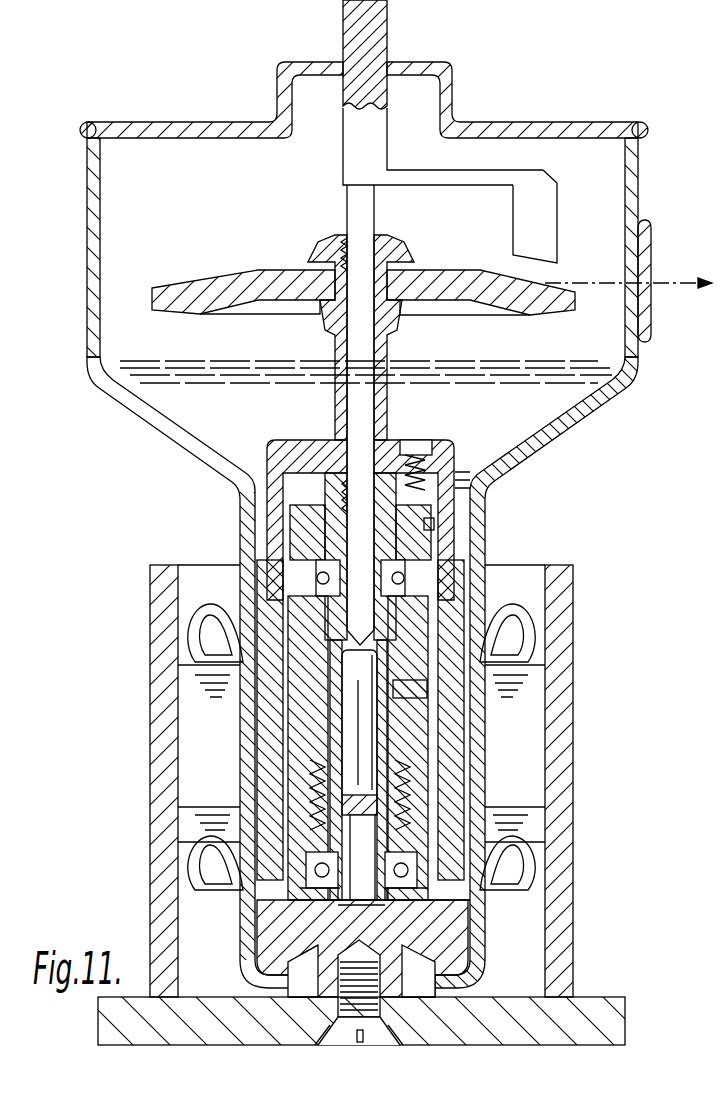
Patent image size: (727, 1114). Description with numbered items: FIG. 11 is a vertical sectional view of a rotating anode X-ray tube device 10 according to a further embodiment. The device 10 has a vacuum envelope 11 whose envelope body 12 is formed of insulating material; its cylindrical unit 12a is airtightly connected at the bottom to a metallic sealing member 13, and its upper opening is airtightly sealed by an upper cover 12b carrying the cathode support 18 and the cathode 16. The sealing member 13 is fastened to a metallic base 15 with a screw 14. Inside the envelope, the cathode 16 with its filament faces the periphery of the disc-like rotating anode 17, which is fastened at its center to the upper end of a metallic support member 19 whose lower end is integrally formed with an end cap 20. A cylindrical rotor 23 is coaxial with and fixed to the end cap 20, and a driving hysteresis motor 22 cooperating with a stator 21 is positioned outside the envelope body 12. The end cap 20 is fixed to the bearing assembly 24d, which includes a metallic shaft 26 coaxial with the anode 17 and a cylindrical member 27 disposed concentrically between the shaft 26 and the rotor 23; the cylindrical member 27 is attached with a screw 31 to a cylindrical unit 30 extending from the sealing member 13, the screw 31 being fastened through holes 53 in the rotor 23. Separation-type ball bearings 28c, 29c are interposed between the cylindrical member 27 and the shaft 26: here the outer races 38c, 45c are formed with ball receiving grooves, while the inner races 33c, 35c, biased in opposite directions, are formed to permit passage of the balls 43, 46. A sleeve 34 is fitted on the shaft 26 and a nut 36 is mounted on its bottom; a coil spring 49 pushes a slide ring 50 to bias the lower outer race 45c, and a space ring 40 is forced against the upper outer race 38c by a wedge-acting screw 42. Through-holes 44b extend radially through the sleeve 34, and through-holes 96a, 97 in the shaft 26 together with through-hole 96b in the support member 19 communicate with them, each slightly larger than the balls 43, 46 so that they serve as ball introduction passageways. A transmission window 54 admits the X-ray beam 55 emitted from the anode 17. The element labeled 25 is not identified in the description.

The rotating anode X-ray tube device 10 is at (84, 264).
The vacuum envelope 11 is at (205, 122).
The envelope body 12 is at (148, 430).
The cylindrical unit 12a is at (88, 356).
The upper cover 12b is at (558, 122).
The sealing member 13 is at (302, 965).
The screw 14 is at (346, 1035).
The base 15 is at (622, 1010).
The cathode 16 is at (553, 215).
The rotating anode 17 is at (455, 270).
The cathode support 18 is at (445, 170).
The support member 19 is at (393, 348).
The end cap 20 is at (316, 440).
The stator 21 is at (530, 733).
The driving hysteresis motor 22 is at (546, 608).
The cylindrical rotor 23 is at (456, 530).
The bearing assembly 24d is at (278, 516).
The adjusting screw 25 is at (420, 440).
The shaft 26 is at (370, 740).
The cylindrical member 27 is at (305, 733).
The separation-type ball bearing 28c is at (436, 515).
The separation-type ball bearing 29c is at (420, 905).
The cylindrical unit 30 is at (290, 763).
The screw 31 is at (505, 685).
The inner race 33c is at (359, 775).
The sleeve 34 is at (330, 700).
The inner race 35c is at (332, 900).
The nut 36 is at (322, 902).
The outer race 38c is at (305, 574).
The space ring 40 is at (300, 540).
The screw 42 is at (434, 525).
The ball 43 is at (415, 582).
The through-holes 44b is at (494, 618).
The outer race 45c is at (305, 883).
The ball 46 is at (418, 887).
The coil spring 49 is at (400, 772).
The slide ring 50 is at (430, 832).
The holes 53 is at (450, 695).
The transmission window 54 is at (645, 222).
The X-ray 55 is at (700, 282).
The through-hole 96a is at (357, 497).
The through-hole 96b is at (362, 250).
The through-hole 97 is at (384, 978).